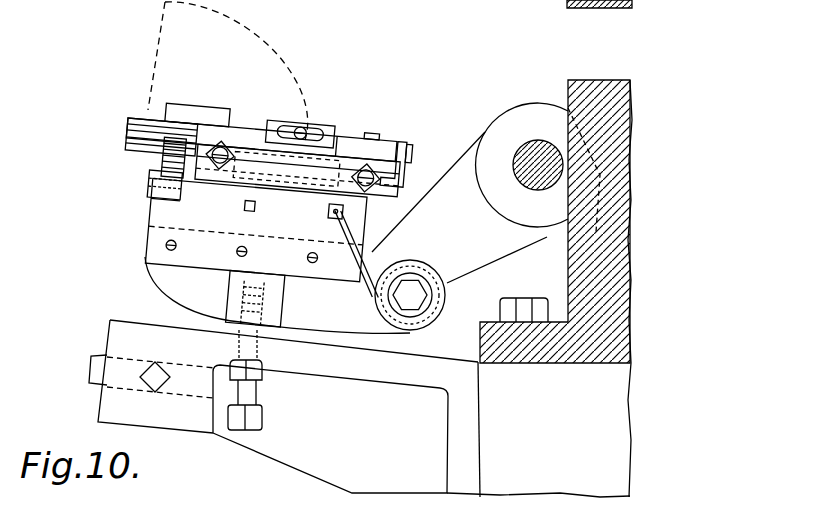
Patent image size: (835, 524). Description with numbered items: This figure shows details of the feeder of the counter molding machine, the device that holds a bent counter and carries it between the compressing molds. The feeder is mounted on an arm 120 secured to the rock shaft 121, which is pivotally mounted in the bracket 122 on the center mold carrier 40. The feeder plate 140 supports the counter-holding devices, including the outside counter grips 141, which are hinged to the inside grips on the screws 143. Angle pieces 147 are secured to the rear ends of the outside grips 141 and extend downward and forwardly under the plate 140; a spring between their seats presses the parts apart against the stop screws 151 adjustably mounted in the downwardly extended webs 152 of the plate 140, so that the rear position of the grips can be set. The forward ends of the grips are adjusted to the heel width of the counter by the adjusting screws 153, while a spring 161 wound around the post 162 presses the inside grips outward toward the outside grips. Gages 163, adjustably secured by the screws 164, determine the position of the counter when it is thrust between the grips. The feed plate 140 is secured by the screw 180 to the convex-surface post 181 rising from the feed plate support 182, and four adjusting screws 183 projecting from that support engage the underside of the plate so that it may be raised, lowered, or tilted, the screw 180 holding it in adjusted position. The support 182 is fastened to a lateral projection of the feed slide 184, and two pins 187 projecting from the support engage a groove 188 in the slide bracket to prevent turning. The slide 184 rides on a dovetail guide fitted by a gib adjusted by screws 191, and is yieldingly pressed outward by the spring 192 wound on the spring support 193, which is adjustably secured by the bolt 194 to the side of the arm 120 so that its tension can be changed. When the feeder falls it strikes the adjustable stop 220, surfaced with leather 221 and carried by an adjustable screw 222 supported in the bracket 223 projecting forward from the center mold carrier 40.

The center mold carrier 40 is at (636, 472).
The arm 120 is at (458, 163).
The rock shaft 121 is at (537, 148).
The bracket 122 is at (612, 263).
The feeder plate 140 is at (152, 120).
The outside counter grips 141 is at (184, 108).
The screws 143 is at (376, 130).
The angle pieces 147 is at (396, 150).
The stop screws 151 is at (366, 181).
The downwardly extended webs 152 is at (342, 200).
The adjusting screws 153 is at (224, 140).
The spring 161 is at (132, 132).
The post 162 is at (142, 144).
The gages 163 is at (324, 126).
The screws 164 is at (300, 118).
The screw 180 is at (276, 80).
The convex-surface post 181 is at (297, 193).
The feed plate support 182 is at (152, 190).
The adjusting screws 183 is at (164, 160).
The feed slide 184 is at (160, 221).
The pins 187 is at (252, 190).
The groove 188 is at (248, 205).
The screws 191 is at (166, 243).
The spring 192 is at (357, 266).
The spring support 193 is at (446, 287).
The bolt 194 is at (406, 285).
The adjustable stop 220 is at (240, 288).
The leather 221 is at (240, 272).
The adjustable screw 222 is at (250, 400).
The bracket 223 is at (284, 452).